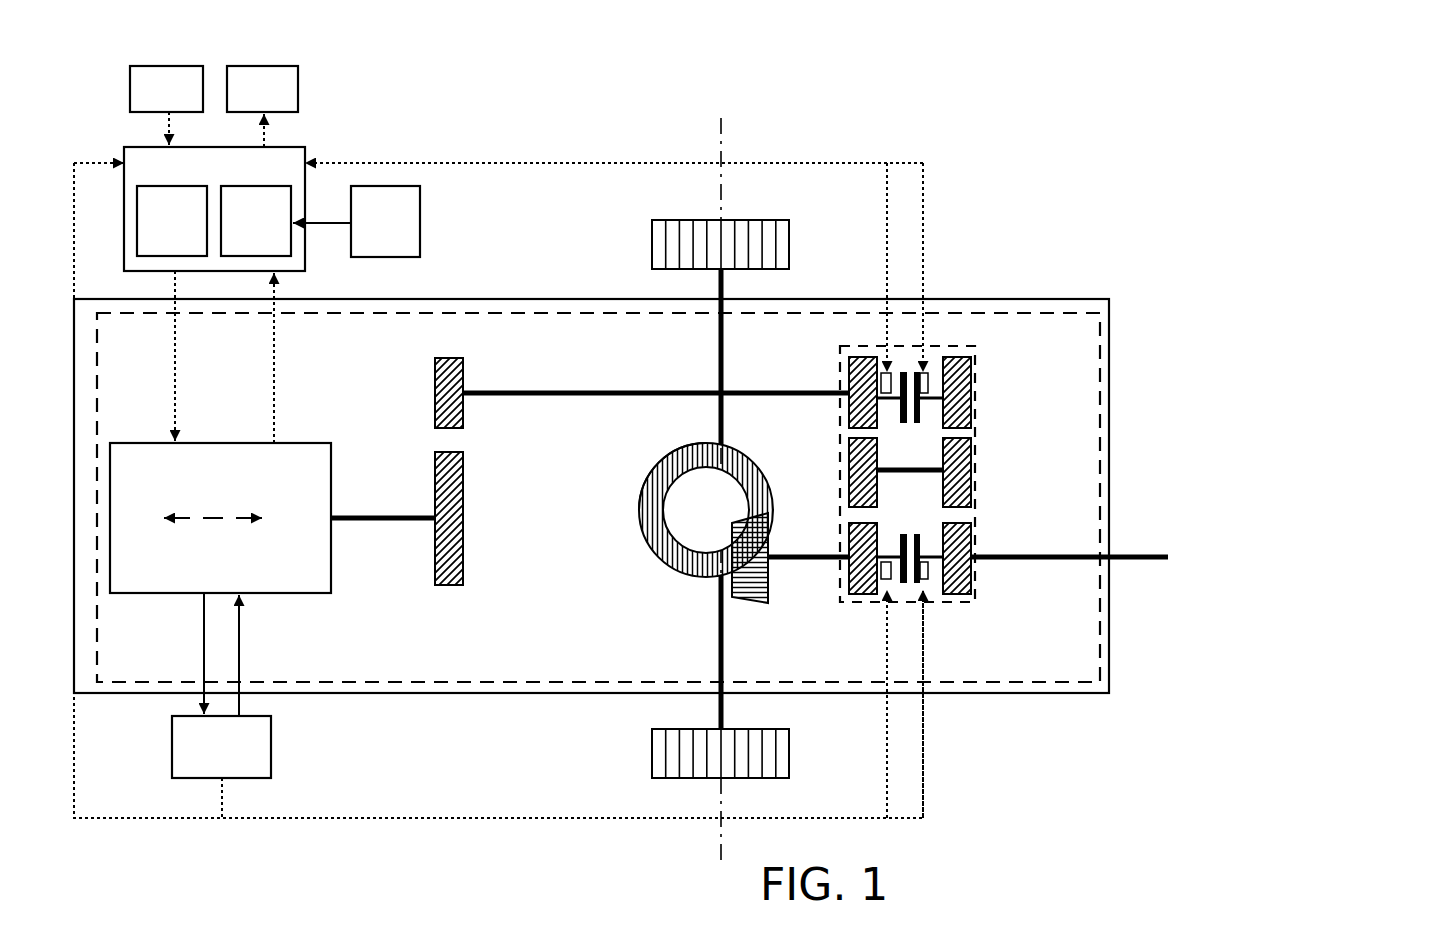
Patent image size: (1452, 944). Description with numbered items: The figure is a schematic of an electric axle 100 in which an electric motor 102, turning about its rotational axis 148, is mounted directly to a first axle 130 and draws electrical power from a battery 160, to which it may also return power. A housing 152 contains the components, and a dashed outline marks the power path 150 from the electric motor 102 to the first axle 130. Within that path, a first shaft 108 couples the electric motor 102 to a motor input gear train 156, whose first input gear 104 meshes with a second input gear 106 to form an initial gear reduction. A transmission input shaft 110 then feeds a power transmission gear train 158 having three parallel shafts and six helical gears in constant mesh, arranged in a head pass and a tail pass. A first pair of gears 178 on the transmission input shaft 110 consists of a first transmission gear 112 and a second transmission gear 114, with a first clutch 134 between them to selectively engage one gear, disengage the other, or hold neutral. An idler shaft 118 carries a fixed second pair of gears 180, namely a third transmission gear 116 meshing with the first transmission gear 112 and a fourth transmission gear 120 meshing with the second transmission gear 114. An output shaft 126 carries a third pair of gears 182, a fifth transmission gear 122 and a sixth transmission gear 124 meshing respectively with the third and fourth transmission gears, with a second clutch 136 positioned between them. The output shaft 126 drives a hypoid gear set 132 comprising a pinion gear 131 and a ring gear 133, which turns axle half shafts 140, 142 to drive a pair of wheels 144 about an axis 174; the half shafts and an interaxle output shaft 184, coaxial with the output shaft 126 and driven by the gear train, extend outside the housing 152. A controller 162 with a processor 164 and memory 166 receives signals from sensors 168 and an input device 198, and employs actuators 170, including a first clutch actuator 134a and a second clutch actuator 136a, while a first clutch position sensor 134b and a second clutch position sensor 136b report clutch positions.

The electric axle 100 is at (1385, 108).
The electric motor 102 is at (220, 432).
The first input gear 104 is at (440, 586).
The second input gear 106 is at (440, 357).
The first shaft 108 is at (352, 518).
The transmission input shaft 110 is at (563, 392).
The first transmission gear 112 is at (849, 392).
The second transmission gear 114 is at (971, 392).
The third transmission gear 116 is at (849, 462).
The idler shaft 118 is at (930, 468).
The fourth transmission gear 120 is at (971, 444).
The fifth transmission gear 122 is at (849, 524).
The sixth transmission gear 124 is at (971, 522).
The output shaft 126 is at (776, 556).
The first axle 130 is at (692, 338).
The gear (pinion gear) 131 is at (748, 601).
The hypoid gear set 132 is at (625, 455).
The gear (ring gear) 133 is at (665, 568).
The first clutch 134 is at (912, 370).
The first clutch actuator 134a is at (887, 370).
The first clutch position sensor 134b is at (930, 392).
The second clutch 136 is at (907, 588).
The second clutch actuator 136a is at (887, 584).
The second clutch position sensor 136b is at (930, 573).
The axle half shaft 140 is at (719, 380).
The axle half shaft 142 is at (719, 655).
The wheels 144 is at (710, 220).
The rotational axis 148 is at (245, 516).
The power path 150 is at (515, 682).
The housing 152 is at (413, 299).
The motor input gear train 156 is at (393, 378).
The power transmission gear train 158 is at (975, 345).
The battery 160 is at (221, 705).
The controller 162 is at (214, 209).
The processor 164 is at (172, 221).
The memory 166 is at (256, 221).
The sensors 168 is at (166, 105).
The actuators 170 is at (262, 106).
The axis 174 is at (721, 125).
The first pair of gears 178 is at (832, 352).
The second pair of gears 180 is at (835, 437).
The third pair of gears 182 is at (845, 518).
The interaxle output shaft 184 is at (1155, 555).
The input device 198 is at (356, 221).